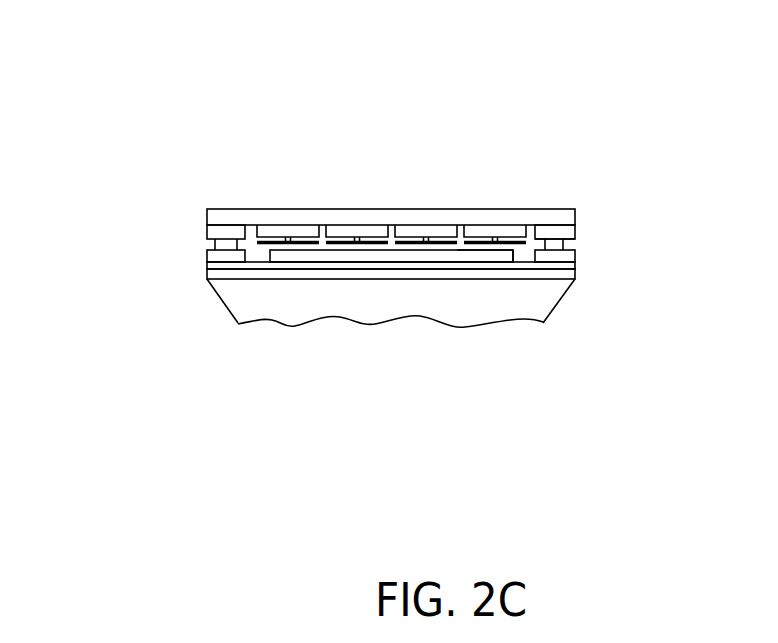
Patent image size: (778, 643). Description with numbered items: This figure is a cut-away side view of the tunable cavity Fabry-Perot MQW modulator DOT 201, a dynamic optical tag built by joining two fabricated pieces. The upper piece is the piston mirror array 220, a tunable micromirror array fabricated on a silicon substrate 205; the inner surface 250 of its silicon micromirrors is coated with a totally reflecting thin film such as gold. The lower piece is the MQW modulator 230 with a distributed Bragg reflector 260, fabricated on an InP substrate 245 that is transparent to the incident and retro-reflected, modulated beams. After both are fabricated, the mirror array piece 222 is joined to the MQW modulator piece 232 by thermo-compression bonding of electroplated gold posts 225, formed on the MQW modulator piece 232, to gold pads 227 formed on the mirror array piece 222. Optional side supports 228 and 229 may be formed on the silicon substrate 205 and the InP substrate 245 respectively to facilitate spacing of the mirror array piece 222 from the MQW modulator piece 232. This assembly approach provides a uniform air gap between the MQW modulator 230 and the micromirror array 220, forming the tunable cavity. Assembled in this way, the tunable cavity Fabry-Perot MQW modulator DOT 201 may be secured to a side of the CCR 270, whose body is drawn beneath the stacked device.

The tunable cavity Fabry-Perot MQW modulator DOT 201 is at (240, 113).
The silicon substrate 205 is at (230, 210).
The piston mirror array 220 is at (443, 240).
The mirror array piece 222 is at (337, 208).
The electroplated gold posts 225 is at (565, 245).
The gold pads 227 is at (575, 238).
The side support 228 is at (575, 233).
The side support 229 is at (575, 257).
The MQW modulator 230 is at (517, 250).
The MQW modulator piece 232 is at (207, 268).
The InP substrate 245 is at (208, 279).
The inner surface 250 is at (407, 250).
The distributed Bragg reflector 260 is at (513, 250).
The CCR 270 is at (238, 323).